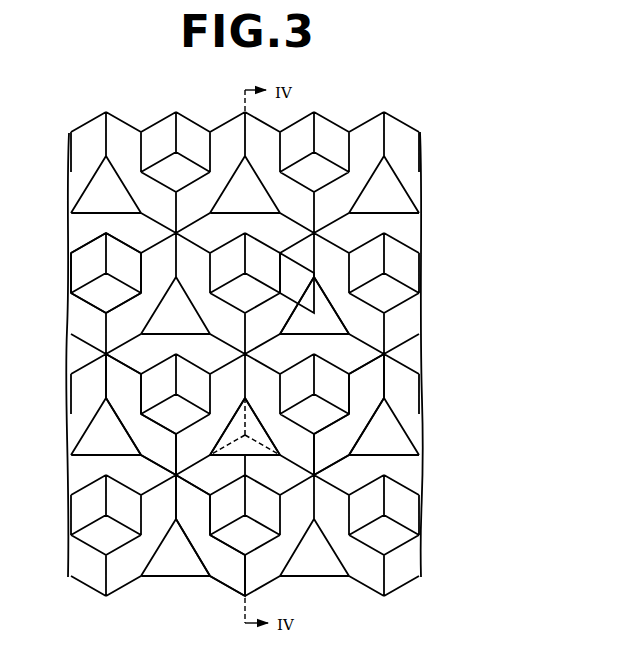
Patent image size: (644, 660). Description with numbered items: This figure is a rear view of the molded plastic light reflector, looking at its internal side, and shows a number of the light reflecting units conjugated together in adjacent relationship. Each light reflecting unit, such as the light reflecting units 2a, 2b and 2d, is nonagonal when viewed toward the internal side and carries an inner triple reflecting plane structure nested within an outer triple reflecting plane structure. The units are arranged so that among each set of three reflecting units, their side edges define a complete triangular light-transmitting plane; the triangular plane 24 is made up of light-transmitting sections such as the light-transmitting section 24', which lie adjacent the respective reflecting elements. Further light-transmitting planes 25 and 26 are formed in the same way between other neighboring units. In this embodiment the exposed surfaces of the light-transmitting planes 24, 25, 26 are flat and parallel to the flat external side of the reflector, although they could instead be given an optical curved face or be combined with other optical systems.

The light-transmitting plane 26 is at (167, 318).
The light-transmitting plane 25 is at (332, 325).
The light reflecting unit 2a is at (297, 268).
The light reflecting unit 2b is at (365, 387).
The light reflecting unit 2d is at (203, 530).
The triangular light-transmitting plane 24 is at (272, 508).
The light-transmitting section 24' is at (247, 439).